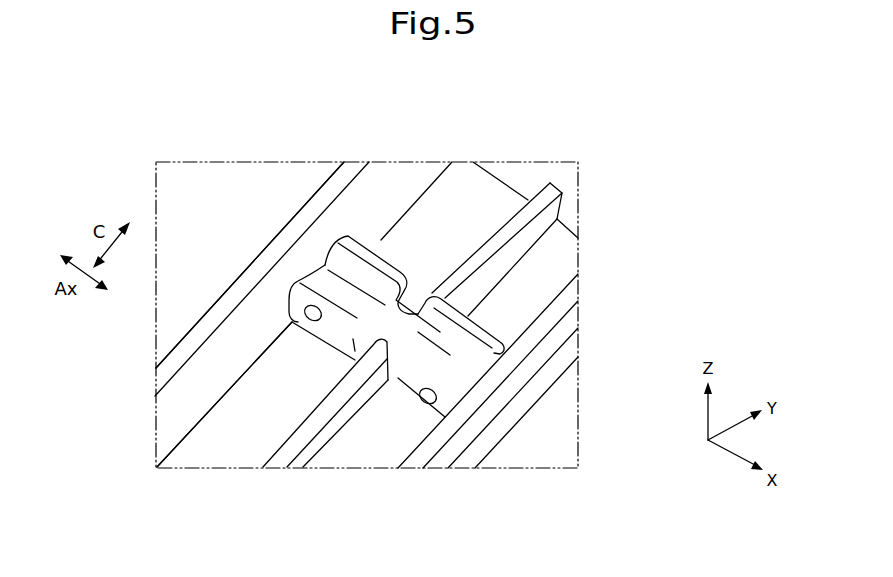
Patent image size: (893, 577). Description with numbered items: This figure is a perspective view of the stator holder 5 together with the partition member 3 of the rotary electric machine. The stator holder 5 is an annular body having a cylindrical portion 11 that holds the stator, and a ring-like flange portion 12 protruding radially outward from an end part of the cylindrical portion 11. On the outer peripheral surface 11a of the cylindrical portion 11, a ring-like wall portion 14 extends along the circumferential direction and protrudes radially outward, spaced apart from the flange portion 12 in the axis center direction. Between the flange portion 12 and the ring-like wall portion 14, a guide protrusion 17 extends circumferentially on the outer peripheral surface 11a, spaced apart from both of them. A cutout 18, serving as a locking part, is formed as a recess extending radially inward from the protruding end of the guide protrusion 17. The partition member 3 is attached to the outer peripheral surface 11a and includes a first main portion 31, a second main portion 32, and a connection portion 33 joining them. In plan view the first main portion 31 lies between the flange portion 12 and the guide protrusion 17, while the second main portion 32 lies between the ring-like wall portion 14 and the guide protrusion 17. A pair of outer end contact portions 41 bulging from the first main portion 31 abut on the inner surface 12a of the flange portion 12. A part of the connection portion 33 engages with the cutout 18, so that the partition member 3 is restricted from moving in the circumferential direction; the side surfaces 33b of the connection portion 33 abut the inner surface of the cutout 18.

The partition member 3 is at (367, 270).
The stator holder 5 is at (175, 347).
The cylindrical portion 11 is at (251, 452).
The outer peripheral surface 11a is at (251, 452).
The flange portion 12 is at (230, 298).
The inner surface of the flange portion 12a is at (167, 418).
The ring-like wall portion 14 is at (566, 300).
The guide protrusion 17 is at (563, 189).
The cutout 18 is at (343, 340).
The first main portion 31 is at (380, 255).
The second main portion 32 is at (497, 296).
The connection portion 33 is at (423, 297).
The side surface of the connection portion 33b is at (345, 348).
The outer end contact portion 41 is at (333, 240).